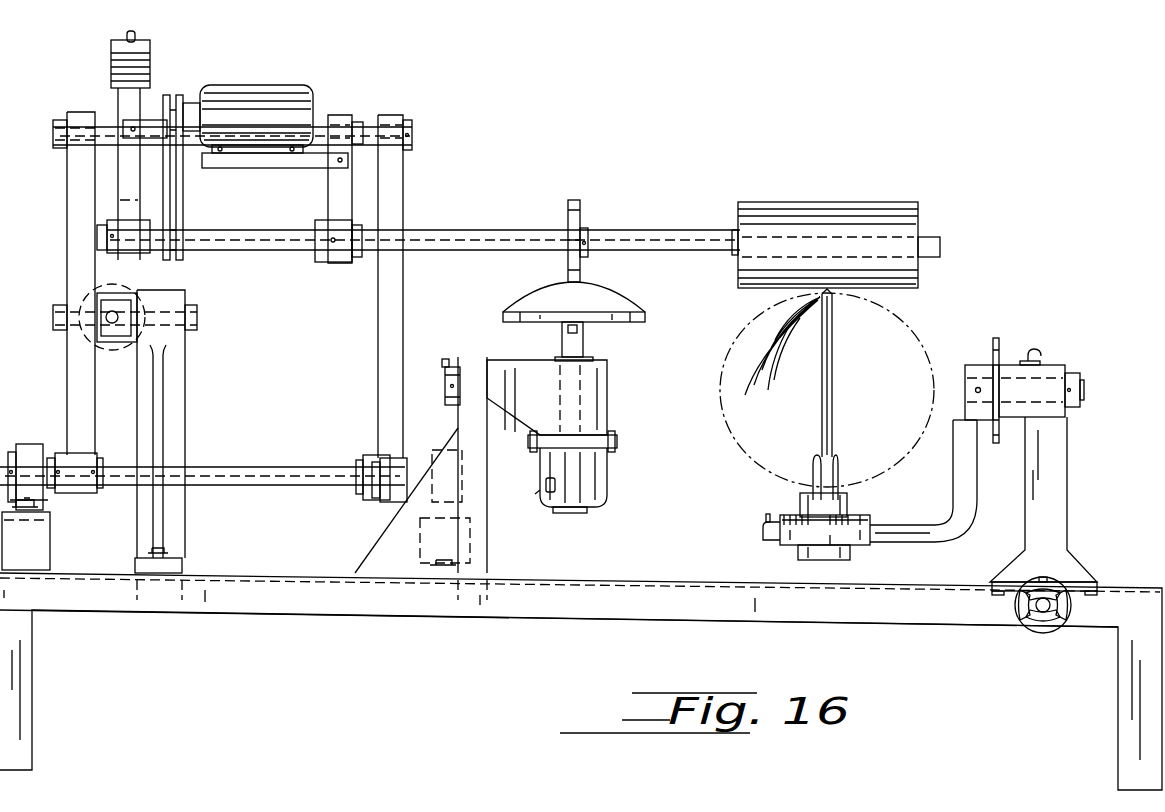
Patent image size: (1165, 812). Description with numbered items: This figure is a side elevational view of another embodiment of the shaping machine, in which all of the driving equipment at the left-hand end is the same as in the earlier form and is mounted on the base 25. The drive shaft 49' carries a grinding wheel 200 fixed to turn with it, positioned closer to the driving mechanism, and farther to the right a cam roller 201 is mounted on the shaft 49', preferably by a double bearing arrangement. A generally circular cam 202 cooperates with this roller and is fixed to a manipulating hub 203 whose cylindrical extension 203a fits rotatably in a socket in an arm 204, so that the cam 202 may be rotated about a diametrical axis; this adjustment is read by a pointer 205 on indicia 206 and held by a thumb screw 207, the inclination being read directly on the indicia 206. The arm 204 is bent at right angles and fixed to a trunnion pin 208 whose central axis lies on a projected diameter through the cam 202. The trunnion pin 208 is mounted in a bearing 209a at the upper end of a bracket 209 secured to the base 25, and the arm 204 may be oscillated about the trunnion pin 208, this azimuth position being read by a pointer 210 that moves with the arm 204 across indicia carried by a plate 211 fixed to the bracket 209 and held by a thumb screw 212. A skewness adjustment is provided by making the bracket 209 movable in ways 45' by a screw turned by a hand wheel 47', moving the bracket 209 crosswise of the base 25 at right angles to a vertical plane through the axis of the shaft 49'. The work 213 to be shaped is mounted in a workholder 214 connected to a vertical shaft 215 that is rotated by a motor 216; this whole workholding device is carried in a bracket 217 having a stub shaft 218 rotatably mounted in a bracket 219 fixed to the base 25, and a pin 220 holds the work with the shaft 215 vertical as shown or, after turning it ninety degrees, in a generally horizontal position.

The base 25 is at (581, 681).
The drive shaft 49' is at (418, 230).
The grinding wheel 200 is at (577, 198).
The cam roller 201 is at (826, 203).
The circular cam 202 is at (834, 379).
The manipulating hub 203 is at (846, 503).
The cylindrical extension 203a is at (850, 556).
The arm 204 is at (960, 497).
The pointer 205 is at (814, 513).
The indicia 206 is at (785, 522).
The thumb screw 207 is at (766, 537).
The trunnion pin 208 is at (1085, 390).
The bracket 209 is at (1052, 465).
The bearing 209a is at (1052, 372).
The pointer 210 is at (982, 359).
The plate 211 is at (996, 340).
The thumb screw 212 is at (1036, 350).
The work 213 is at (616, 300).
The workholder 214 is at (608, 322).
The vertical shaft 215 is at (562, 343).
The motor 216 is at (608, 479).
The bracket 217 is at (527, 415).
The stub shaft 218 is at (446, 388).
The bracket 219 is at (460, 419).
The pin 220 is at (442, 360).
The ways 45' is at (1062, 603).
The hand wheel 47' is at (1037, 620).